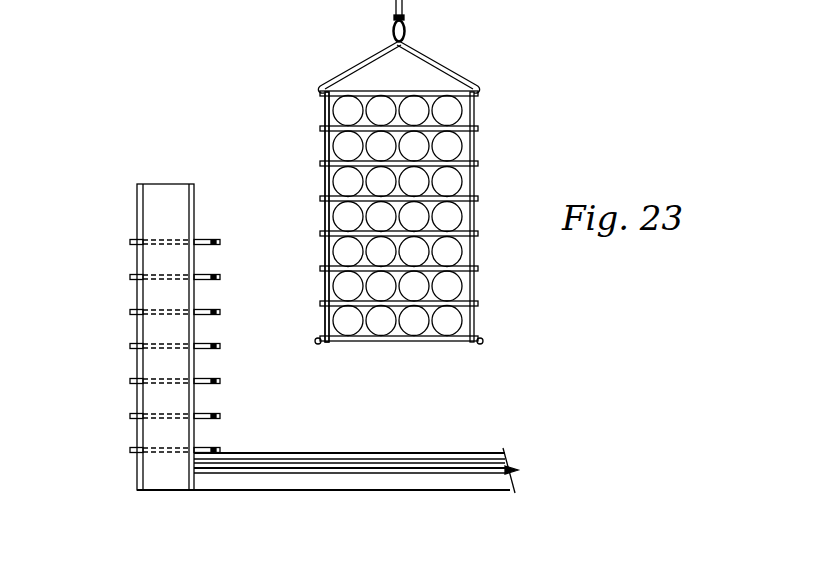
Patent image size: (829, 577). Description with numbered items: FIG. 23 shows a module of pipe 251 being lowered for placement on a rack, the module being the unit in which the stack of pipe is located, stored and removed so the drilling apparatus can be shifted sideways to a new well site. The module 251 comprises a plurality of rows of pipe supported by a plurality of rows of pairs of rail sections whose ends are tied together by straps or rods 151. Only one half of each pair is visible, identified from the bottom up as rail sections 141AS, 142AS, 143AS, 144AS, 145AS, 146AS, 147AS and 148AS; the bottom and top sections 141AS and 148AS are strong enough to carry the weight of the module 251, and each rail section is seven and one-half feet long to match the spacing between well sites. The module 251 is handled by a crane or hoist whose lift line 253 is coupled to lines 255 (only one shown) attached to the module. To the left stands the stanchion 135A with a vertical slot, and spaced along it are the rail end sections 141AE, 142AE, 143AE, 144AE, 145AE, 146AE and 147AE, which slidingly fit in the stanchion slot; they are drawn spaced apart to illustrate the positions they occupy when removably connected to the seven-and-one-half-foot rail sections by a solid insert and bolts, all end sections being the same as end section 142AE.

The lift line 253 is at (404, 8).
The lines 255 is at (455, 70).
The module of pipe 251 is at (478, 160).
The straps or rods 151 is at (325, 181).
The rail section 148AS is at (478, 103).
The rail section 147AS is at (478, 140).
The rail section 146AS is at (478, 176).
The rail section 145AS is at (478, 207).
The rail section 144AS is at (478, 224).
The rail section 143AS is at (478, 290).
The rail section 142AS is at (478, 320).
The rail section 141AS is at (443, 343).
The loading post 135A is at (137, 210).
The rail end section 147AE is at (130, 242).
The rail end section 146AE is at (130, 277).
The rail end section 145AE is at (130, 312).
The rail end section 144AE is at (130, 346).
The rail end section 143AE is at (130, 381).
The rail end section 142AE is at (130, 416).
The rail end section 141AE is at (130, 450).